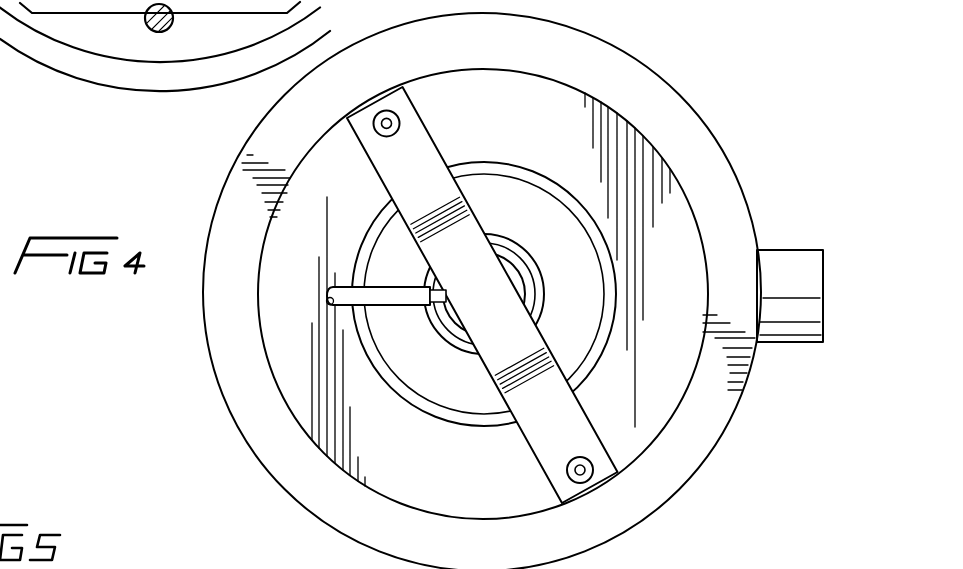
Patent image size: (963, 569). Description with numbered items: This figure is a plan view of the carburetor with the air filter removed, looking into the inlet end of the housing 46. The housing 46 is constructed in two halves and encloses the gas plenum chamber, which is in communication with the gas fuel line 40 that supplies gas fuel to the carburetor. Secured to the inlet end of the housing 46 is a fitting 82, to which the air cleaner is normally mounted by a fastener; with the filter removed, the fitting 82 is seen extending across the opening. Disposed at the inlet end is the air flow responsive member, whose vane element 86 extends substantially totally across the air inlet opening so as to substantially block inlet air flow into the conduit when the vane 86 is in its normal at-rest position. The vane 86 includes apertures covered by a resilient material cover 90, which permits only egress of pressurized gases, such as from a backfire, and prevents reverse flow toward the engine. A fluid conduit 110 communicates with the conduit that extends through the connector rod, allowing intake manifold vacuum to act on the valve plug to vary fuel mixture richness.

The gas fuel line 40 is at (788, 250).
The housing 46 is at (672, 90).
The fitting 82 is at (430, 147).
The vane element 86 is at (410, 401).
The resilient material cover 90 is at (472, 395).
The fluid conduit 110 is at (340, 291).